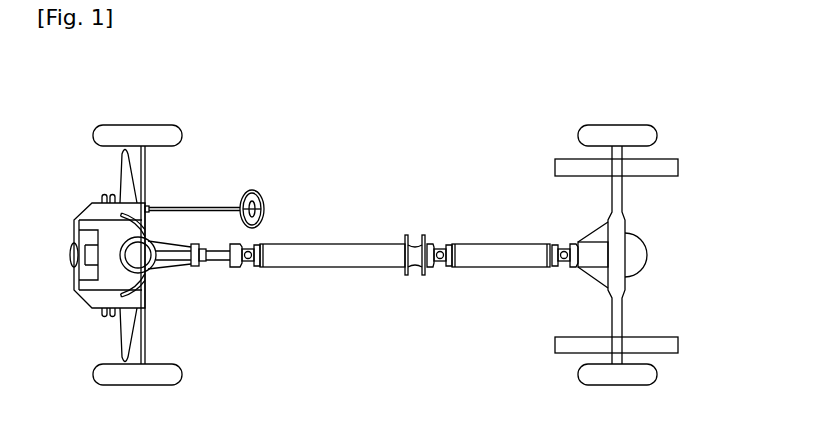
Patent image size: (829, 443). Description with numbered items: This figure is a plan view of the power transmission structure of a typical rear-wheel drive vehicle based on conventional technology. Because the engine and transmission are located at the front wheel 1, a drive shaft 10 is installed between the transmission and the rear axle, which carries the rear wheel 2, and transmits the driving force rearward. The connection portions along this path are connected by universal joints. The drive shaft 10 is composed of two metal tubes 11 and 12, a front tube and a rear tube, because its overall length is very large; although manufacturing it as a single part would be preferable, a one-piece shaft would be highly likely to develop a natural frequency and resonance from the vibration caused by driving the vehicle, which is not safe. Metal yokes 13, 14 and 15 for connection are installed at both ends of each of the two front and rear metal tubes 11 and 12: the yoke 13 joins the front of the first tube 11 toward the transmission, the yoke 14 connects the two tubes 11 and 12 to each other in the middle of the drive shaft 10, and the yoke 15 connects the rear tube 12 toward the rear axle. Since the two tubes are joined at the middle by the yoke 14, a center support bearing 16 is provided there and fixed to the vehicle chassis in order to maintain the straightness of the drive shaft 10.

The front wheel 1 is at (150, 133).
The rear wheel 2 is at (617, 132).
The drive shaft 10 is at (384, 305).
The metal tube 11 is at (325, 258).
The metal tube 12 is at (502, 254).
The metal yoke 13 is at (252, 270).
The metal yoke 14 is at (435, 268).
The metal yoke 15 is at (557, 270).
The center support bearing 16 is at (417, 262).